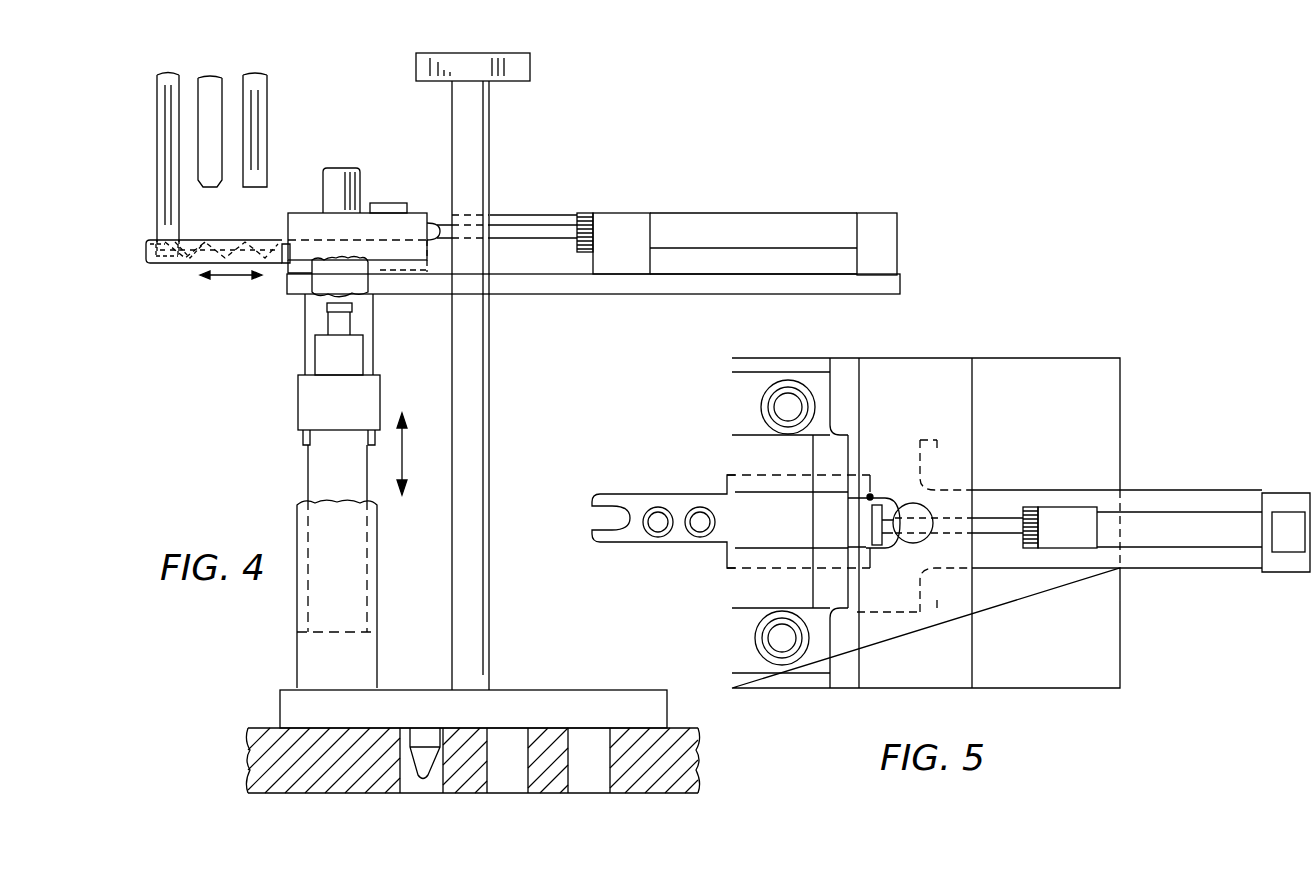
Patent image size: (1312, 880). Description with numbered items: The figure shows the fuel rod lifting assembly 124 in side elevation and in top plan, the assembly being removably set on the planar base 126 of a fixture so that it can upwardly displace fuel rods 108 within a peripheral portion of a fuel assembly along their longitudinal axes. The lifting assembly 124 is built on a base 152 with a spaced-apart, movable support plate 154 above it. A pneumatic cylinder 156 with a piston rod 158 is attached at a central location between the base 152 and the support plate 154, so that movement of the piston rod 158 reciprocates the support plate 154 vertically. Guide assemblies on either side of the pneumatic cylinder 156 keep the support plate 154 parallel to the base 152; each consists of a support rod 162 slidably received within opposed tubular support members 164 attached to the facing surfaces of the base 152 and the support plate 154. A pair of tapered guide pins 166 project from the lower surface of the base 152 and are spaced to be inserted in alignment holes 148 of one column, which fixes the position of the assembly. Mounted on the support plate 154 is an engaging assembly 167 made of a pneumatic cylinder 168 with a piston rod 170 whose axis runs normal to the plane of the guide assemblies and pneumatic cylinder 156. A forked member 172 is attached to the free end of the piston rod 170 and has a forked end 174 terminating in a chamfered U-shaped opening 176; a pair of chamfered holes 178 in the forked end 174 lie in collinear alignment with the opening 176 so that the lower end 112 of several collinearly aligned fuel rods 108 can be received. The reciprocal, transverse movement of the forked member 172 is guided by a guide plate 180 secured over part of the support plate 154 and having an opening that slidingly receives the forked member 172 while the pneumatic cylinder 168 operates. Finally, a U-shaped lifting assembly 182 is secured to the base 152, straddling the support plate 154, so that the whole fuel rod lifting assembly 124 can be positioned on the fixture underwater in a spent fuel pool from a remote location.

In FIG. 4, the fuel rods 108 is at (263, 110).
In FIG. 4, the lower end 112 is at (160, 270).
In FIG. 4, the fuel rod lifting assembly 124 is at (497, 412).
In FIG. 5, the fuel rod lifting assembly 124 is at (985, 360).
In FIG. 4, the base 126 is at (676, 740).
In FIG. 4, the alignment holes 148 is at (583, 783).
In FIG. 4, the base 152 is at (558, 705).
In FIG. 5, the base 152 is at (1090, 634).
In FIG. 4, the support plate 154 is at (590, 284).
In FIG. 5, the support plate 154 is at (1153, 560).
In FIG. 4, the pneumatic cylinder 156 is at (330, 470).
In FIG. 4, the piston rod 158 is at (325, 318).
In FIG. 5, the support rod 162 is at (788, 405).
In FIG. 4, the tubular support members 164 is at (372, 320).
In FIG. 4, the tapered guide pins 166 is at (412, 770).
In FIG. 4, the engaging assembly 167 is at (615, 225).
In FIG. 5, the engaging assembly 167 is at (875, 490).
In FIG. 4, the pneumatic cylinder 168 is at (775, 225).
In FIG. 5, the pneumatic cylinder 168 is at (1212, 520).
In FIG. 4, the piston rod 170 is at (518, 232).
In FIG. 5, the piston rod 170 is at (990, 523).
In FIG. 4, the forked member 172 is at (272, 265).
In FIG. 5, the forked member 172 is at (727, 540).
In FIG. 4, the forked end 174 is at (185, 264).
In FIG. 5, the forked end 174 is at (628, 544).
In FIG. 4, the chamfered U-shaped opening 176 is at (160, 243).
In FIG. 5, the chamfered U-shaped opening 176 is at (592, 514).
In FIG. 4, the chamfered holes 178 is at (215, 242).
In FIG. 5, the chamfered holes 178 is at (700, 508).
In FIG. 4, the guide plate 180 is at (305, 213).
In FIG. 5, the guide plate 180 is at (740, 597).
In FIG. 4, the U-shaped lifting assembly 182 is at (455, 155).
In FIG. 5, the U-shaped lifting assembly 182 is at (928, 690).